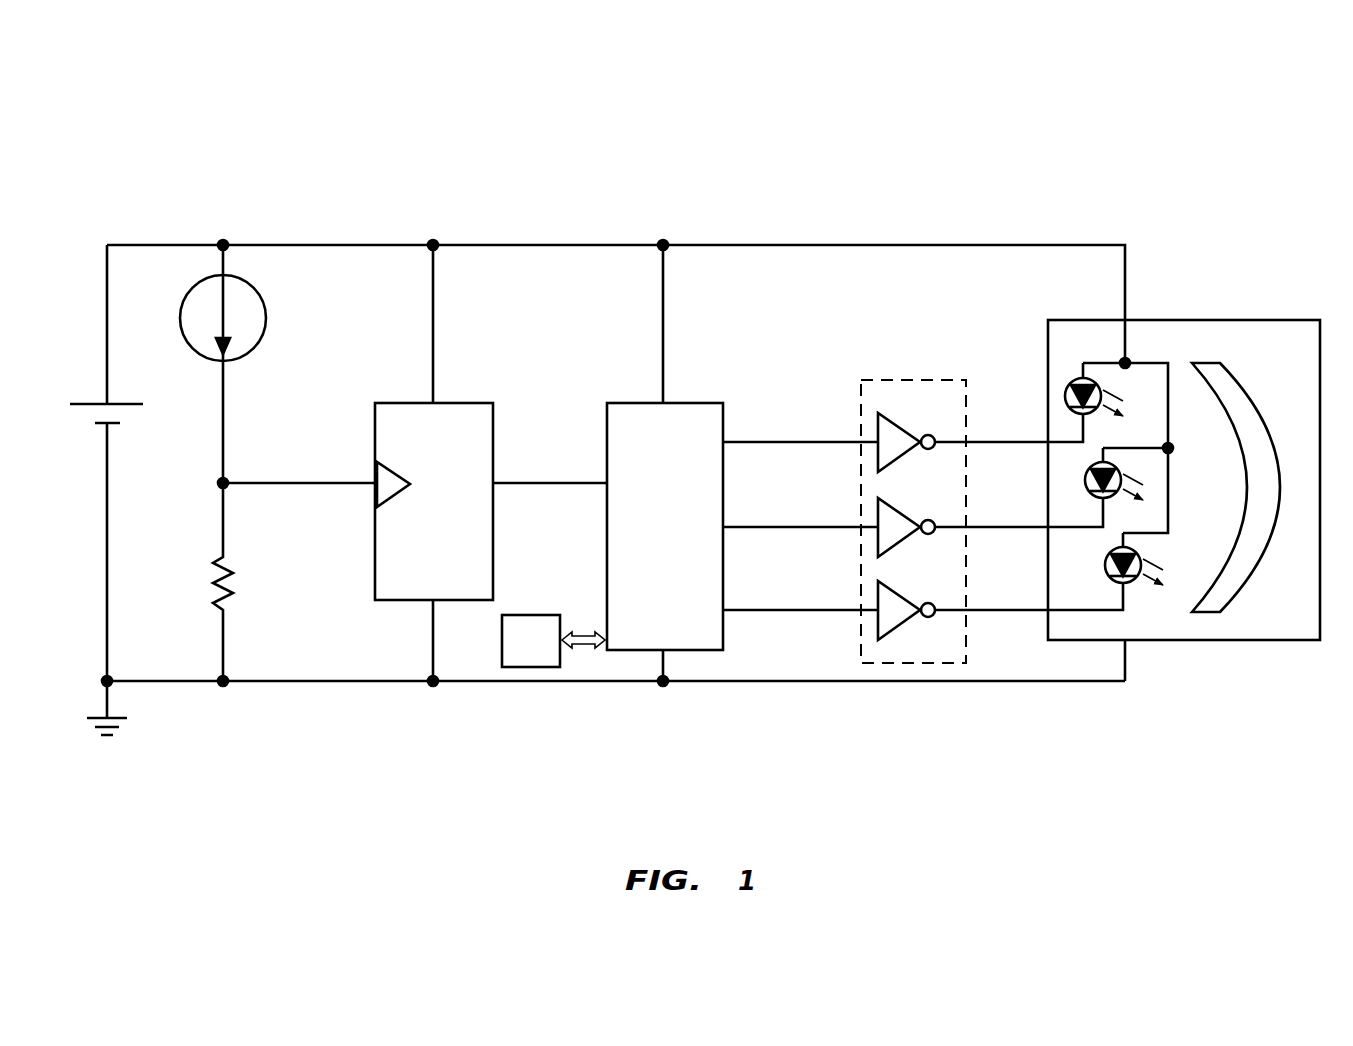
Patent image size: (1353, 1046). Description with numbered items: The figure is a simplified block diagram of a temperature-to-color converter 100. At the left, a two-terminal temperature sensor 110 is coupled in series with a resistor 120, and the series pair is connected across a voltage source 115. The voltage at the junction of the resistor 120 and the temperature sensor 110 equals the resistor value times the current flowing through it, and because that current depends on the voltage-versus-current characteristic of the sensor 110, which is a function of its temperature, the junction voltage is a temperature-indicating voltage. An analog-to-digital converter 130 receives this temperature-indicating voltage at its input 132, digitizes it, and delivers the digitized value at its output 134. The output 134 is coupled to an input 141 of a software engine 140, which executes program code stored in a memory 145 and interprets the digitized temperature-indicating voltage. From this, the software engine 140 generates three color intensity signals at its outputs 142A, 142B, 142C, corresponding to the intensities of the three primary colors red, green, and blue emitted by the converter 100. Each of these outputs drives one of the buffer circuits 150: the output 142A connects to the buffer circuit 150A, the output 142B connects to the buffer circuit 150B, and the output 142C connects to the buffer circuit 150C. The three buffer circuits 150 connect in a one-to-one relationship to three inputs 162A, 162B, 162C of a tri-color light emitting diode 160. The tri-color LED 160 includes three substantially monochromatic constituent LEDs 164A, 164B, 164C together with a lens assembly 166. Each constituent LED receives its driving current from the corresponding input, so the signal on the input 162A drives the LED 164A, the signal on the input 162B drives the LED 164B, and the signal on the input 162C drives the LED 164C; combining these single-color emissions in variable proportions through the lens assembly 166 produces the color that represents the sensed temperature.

The temperature-to-color converter 100 is at (862, 162).
The two-terminal temperature sensor 110 is at (258, 322).
The voltage source 115 is at (128, 418).
The resistor 120 is at (240, 591).
The analog-to-digital converter 130 is at (455, 448).
The input of the A/D converter 132 is at (362, 470).
The output of the A/D converter 134 is at (505, 485).
The software engine 140 is at (685, 448).
The input of the software engine 141 is at (595, 482).
The software engine output 142A is at (800, 440).
The software engine output 142B is at (797, 525).
The software engine output 142C is at (797, 608).
The memory 145 is at (553, 655).
The buffer circuits 150 is at (919, 521).
The buffer circuit 150A is at (902, 413).
The buffer circuit 150B is at (904, 508).
The buffer circuit 150C is at (900, 626).
The tri-color light emitting diode 160 is at (1165, 484).
The input of the tri-color LED 162A is at (1007, 440).
The input of the tri-color LED 162B is at (1007, 525).
The input of the tri-color LED 162C is at (1008, 613).
The constituent LED 164A is at (1066, 385).
The constituent LED 164B is at (1090, 497).
The constituent LED 164C is at (1133, 582).
The lens assembly 166 is at (1233, 393).